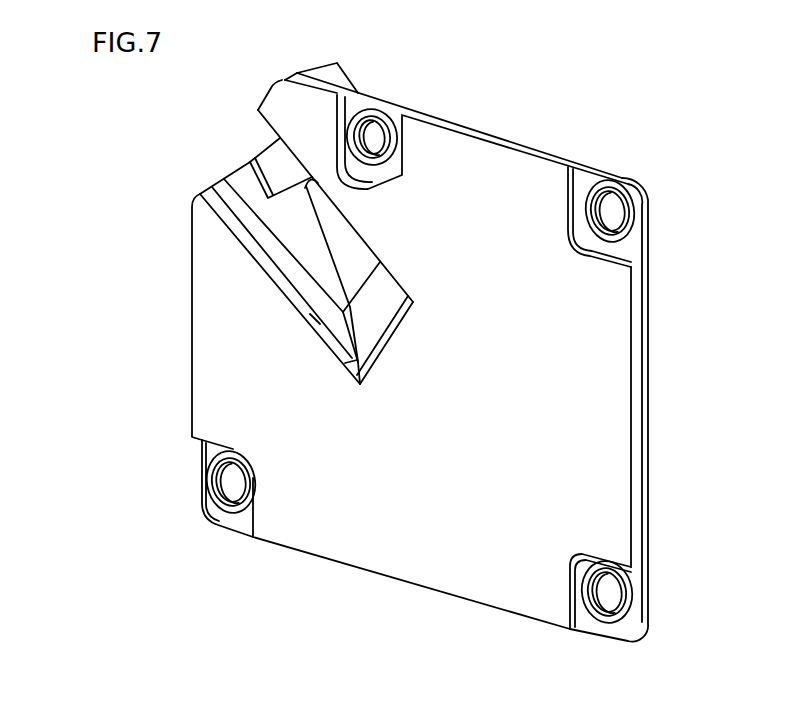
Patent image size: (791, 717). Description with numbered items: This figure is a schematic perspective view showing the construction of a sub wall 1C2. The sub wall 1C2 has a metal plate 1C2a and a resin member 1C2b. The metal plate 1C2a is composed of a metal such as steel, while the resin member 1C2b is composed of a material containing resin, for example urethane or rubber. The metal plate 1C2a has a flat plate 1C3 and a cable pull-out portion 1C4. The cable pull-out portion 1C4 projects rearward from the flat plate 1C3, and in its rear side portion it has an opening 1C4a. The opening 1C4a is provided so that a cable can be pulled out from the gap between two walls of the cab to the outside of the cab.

The sub wall 1C2 is at (643, 360).
The metal plate 1C2a is at (590, 175).
The resin member 1C2b is at (525, 173).
The flat plate 1C3 is at (632, 248).
The cable pull-out portion 1C4 is at (262, 206).
The opening 1C4a is at (255, 148).